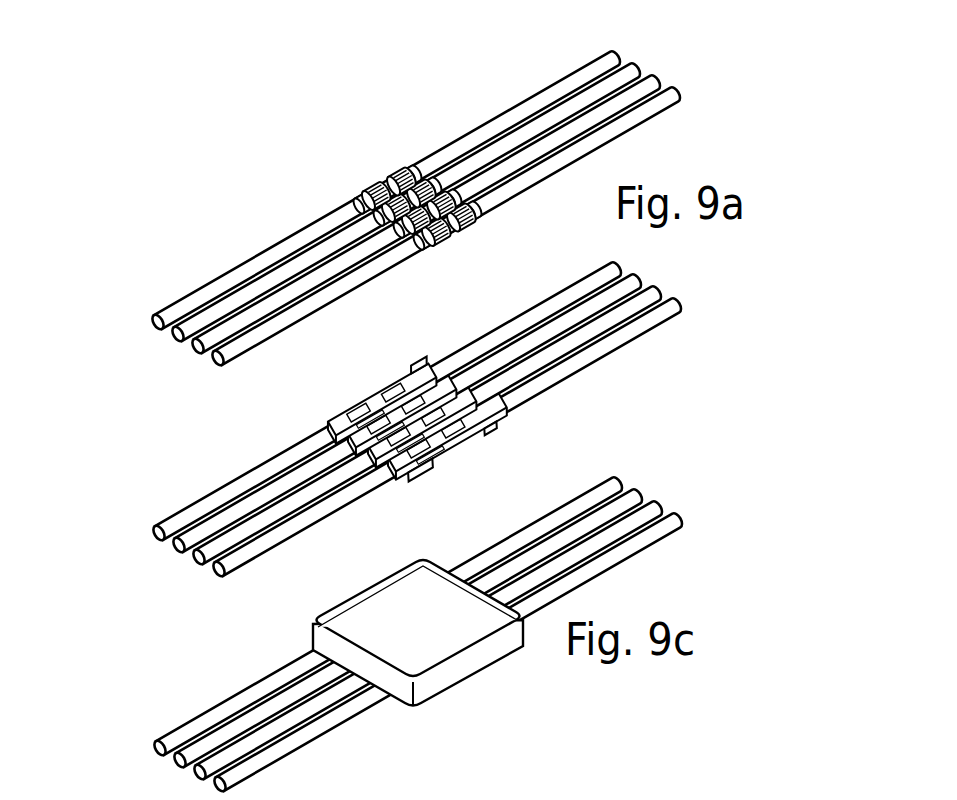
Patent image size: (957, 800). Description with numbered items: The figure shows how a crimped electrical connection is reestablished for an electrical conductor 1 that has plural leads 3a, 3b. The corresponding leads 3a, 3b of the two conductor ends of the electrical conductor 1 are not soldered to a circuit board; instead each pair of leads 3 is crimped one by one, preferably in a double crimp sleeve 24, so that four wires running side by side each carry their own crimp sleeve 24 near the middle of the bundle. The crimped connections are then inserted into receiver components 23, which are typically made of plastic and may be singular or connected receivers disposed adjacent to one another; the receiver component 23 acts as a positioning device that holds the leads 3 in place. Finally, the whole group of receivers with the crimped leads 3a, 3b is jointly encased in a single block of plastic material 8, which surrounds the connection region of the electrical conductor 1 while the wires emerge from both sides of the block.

In FIG. 9A, the electrical conductor 1 is at (406, 419).
In FIG. 9C, the electrical conductor 1 is at (398, 634).
In FIG. 9A, the lead 3 is at (441, 380).
In FIG. 9A, the lead 3a is at (416, 208).
In FIG. 9A, the lead 3b is at (373, 189).
In FIG. 9C, the plastic material 8 is at (375, 618).
In FIG. 9A, the receiver component 23 is at (422, 362).
In FIG. 9A, the crimp sleeve 24 is at (387, 183).